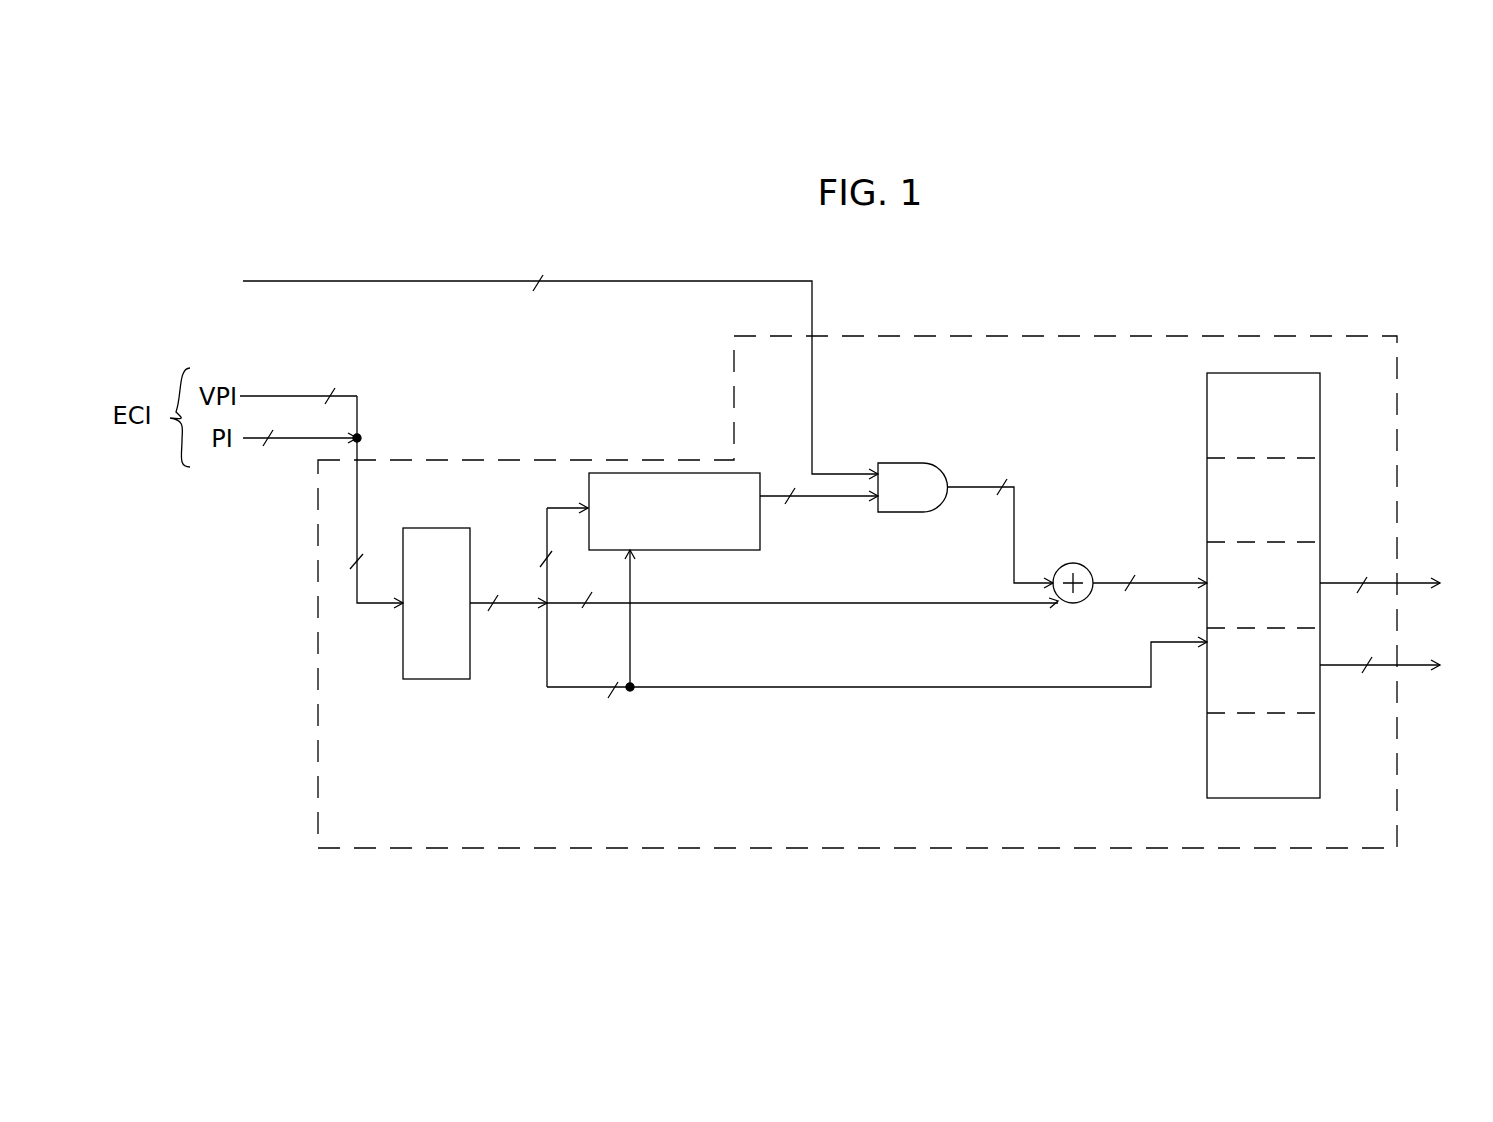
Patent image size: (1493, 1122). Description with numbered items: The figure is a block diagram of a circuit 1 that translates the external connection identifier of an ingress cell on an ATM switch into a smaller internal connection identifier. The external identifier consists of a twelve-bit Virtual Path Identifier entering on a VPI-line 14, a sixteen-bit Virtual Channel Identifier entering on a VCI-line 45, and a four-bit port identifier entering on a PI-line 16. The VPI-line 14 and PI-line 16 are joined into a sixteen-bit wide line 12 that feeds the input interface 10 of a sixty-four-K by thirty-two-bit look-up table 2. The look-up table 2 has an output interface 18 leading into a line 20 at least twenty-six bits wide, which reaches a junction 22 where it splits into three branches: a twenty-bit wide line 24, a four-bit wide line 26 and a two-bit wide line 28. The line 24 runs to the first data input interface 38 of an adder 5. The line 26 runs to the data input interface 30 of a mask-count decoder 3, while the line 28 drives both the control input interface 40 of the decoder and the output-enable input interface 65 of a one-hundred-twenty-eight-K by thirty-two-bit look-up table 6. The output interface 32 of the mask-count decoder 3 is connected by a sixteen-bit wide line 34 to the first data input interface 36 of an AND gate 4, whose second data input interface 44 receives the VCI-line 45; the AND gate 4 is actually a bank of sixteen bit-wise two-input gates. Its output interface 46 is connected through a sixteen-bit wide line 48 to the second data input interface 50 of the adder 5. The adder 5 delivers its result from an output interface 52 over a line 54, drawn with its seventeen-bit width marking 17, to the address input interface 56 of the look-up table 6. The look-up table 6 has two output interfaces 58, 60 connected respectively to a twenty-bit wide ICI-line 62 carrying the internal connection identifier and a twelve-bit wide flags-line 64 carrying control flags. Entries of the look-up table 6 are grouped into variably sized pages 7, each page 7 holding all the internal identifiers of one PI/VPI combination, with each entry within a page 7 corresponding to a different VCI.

The circuit 1 is at (857, 592).
The look-up table 2 is at (511, 627).
The mask-count decoder 3 is at (674, 511).
The AND gate 4 is at (931, 463).
The adder 5 is at (1073, 605).
The look-up table 6 is at (1196, 390).
The page 7 is at (1221, 590).
The input interface 10 is at (400, 607).
The line 12 is at (266, 576).
The VPI-line 14 is at (285, 392).
The PI-line 16 is at (281, 480).
The 17-bit bus 17 is at (1124, 598).
The output interface 18 is at (471, 600).
The line 20 is at (543, 601).
The junction 22 is at (546, 607).
The line 24 is at (752, 604).
The line 26 is at (512, 436).
The line 28 is at (567, 690).
The data input interface 30 is at (586, 506).
The output interface 32 is at (766, 496).
The line 34 is at (813, 498).
The first data input interface 36 is at (875, 497).
The first data input interface 38 is at (1055, 603).
The control input interface 40 is at (633, 552).
The second data input interface 44 is at (875, 476).
The VCI-line 45 is at (748, 281).
The output interface 46 is at (990, 481).
The line 48 is at (1015, 528).
The second data input interface 50 is at (1052, 582).
The output interface 52 is at (1088, 600).
The line 54 is at (1170, 584).
The address input interface 56 is at (1203, 582).
The output interface 58 is at (1323, 582).
The output interface 60 is at (1323, 667).
The ICI-line 62 is at (1438, 585).
The flags-line 64 is at (1420, 664).
The output-enable input interface 65 is at (1201, 646).